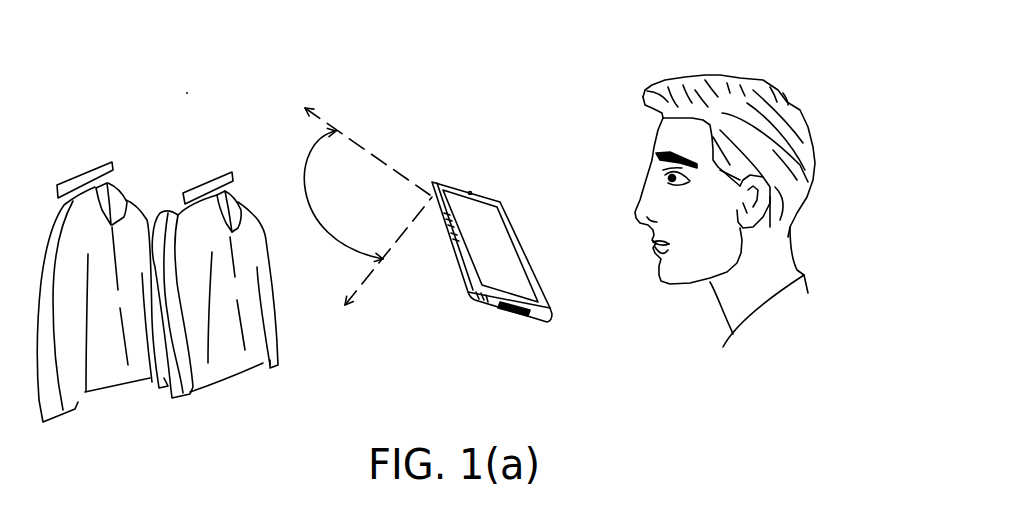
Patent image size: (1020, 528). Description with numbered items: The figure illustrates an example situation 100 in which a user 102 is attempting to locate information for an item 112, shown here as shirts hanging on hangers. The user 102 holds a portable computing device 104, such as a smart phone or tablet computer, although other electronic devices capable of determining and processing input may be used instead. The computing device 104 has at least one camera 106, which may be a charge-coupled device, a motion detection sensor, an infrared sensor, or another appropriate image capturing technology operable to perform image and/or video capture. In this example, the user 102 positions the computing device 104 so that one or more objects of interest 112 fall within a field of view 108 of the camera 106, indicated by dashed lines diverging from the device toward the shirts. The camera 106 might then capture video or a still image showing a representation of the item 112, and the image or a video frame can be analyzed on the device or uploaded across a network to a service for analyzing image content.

The example situation 100 is at (212, 87).
The user 102 is at (640, 127).
The computing device 104 is at (483, 303).
The camera 106 is at (434, 190).
The field of view 108 is at (343, 194).
The item 112 is at (170, 415).